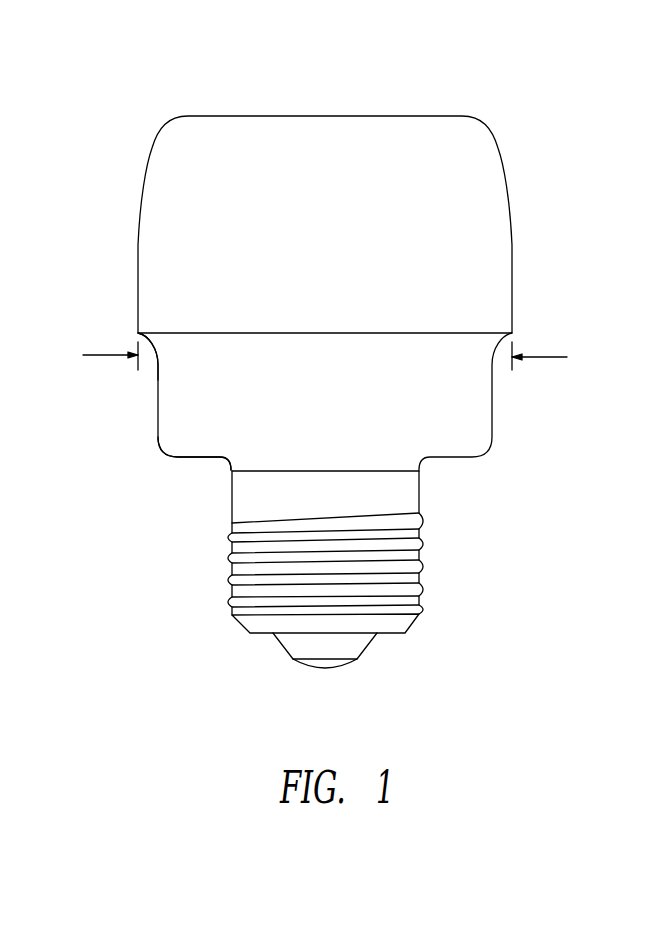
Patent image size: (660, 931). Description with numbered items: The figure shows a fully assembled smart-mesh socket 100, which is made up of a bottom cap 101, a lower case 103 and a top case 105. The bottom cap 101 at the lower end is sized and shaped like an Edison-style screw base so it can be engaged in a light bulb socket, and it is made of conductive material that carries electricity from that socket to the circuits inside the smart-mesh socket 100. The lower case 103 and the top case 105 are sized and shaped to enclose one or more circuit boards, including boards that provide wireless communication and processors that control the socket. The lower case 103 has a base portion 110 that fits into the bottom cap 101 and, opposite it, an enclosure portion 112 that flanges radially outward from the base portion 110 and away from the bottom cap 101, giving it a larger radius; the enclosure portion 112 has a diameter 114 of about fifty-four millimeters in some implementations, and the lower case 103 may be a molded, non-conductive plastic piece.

The smart-mesh socket 100 is at (329, 352).
The bottom cap 101 is at (420, 583).
The lower case 103 is at (492, 405).
The top case 105 is at (480, 188).
The base portion 110 is at (228, 470).
The enclosure portion 112 is at (158, 397).
The diameter 114 is at (553, 357).